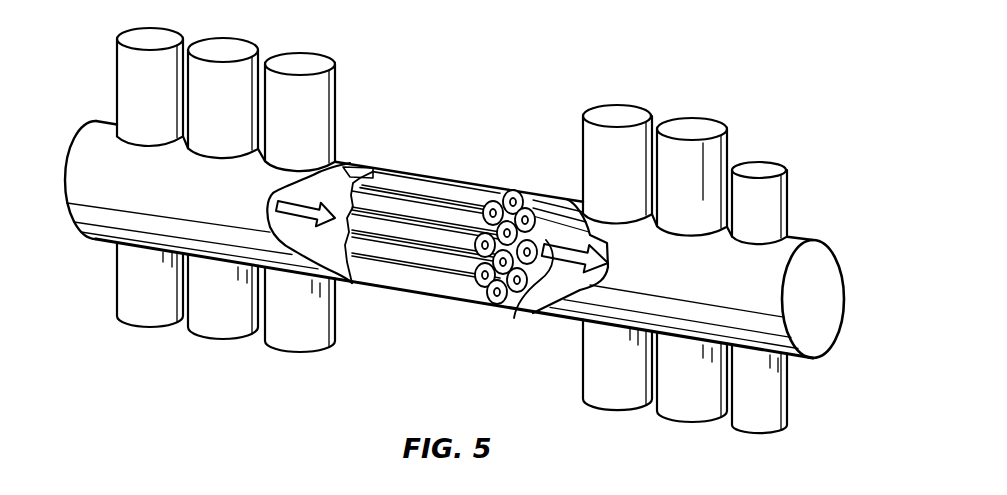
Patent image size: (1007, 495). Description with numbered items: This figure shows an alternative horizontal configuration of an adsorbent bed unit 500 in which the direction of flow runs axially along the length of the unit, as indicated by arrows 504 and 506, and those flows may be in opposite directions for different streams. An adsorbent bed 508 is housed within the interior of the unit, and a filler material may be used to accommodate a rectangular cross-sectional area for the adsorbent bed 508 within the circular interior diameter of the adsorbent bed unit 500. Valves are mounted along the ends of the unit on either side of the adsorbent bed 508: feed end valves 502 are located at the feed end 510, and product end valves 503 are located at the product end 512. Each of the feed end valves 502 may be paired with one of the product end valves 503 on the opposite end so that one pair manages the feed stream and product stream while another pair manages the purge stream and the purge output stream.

The adsorbent bed unit 500 is at (758, 54).
The feed end valves 502 is at (178, 27).
The product end valves 503 is at (650, 111).
The arrow 504 is at (279, 193).
The arrow 506 is at (517, 308).
The adsorbent bed 508 is at (444, 174).
The feed end 510 is at (93, 142).
The product end 512 is at (822, 326).